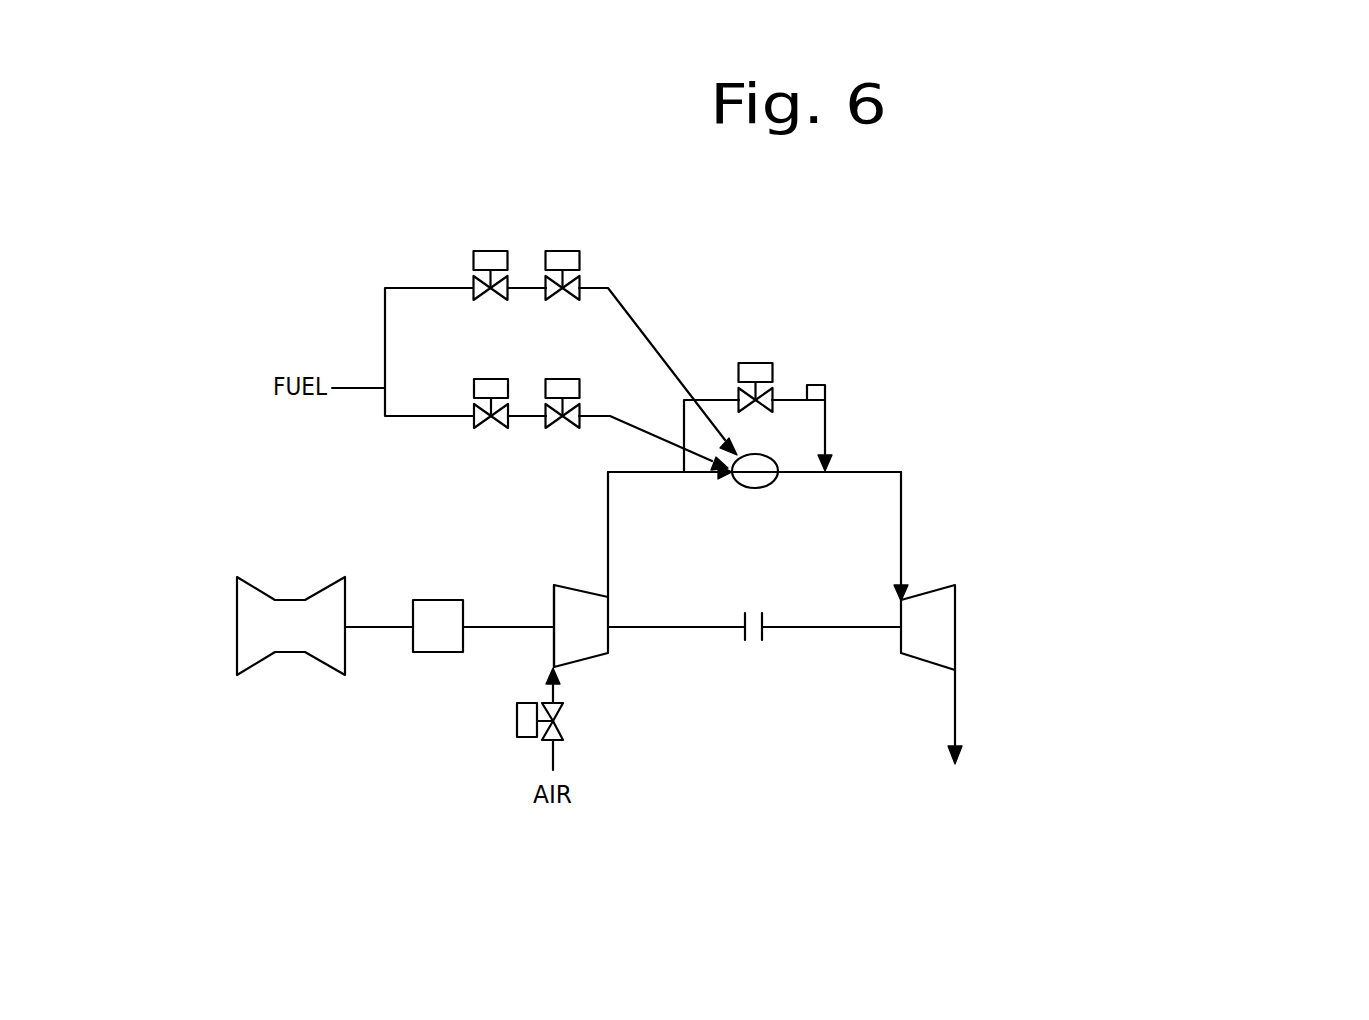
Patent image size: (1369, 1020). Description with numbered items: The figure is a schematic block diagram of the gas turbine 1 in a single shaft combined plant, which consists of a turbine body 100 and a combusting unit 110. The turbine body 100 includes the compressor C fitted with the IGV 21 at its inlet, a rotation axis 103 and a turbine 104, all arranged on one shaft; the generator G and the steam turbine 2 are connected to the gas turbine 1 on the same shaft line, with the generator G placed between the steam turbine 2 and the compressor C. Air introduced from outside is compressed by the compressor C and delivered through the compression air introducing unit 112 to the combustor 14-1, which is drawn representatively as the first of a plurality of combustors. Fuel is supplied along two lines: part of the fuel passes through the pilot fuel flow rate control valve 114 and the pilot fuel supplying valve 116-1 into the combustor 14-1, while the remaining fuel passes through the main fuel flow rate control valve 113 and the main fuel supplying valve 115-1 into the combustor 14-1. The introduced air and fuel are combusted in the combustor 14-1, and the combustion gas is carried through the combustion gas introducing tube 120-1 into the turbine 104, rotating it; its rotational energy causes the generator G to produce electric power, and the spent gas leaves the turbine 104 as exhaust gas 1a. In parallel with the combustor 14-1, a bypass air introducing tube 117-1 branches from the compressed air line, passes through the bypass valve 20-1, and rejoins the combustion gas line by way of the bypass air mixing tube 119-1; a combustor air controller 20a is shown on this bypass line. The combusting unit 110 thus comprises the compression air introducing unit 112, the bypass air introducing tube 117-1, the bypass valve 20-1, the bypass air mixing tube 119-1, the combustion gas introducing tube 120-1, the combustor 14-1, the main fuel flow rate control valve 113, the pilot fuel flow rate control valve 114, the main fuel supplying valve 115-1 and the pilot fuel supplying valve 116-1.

The gas turbine 1 is at (973, 218).
The exhaust gas 1a is at (1026, 731).
The steam turbine 2 is at (282, 650).
The combustor 14-1 is at (736, 488).
The bypass valve 20-1 is at (748, 366).
The combustor air controller 20a is at (818, 385).
The IGV 21 is at (532, 663).
The turbine body 100 is at (792, 748).
The rotation axis 103 is at (795, 630).
The turbine 104 is at (955, 655).
The combusting unit 110 is at (1020, 296).
The compression air introducing unit 112 is at (608, 527).
The main fuel flow rate control valve 113 is at (490, 251).
The pilot fuel flow rate control valve 114 is at (474, 388).
The main fuel supplying valve 115-1 is at (561, 251).
The pilot fuel supplying valve 116-1 is at (568, 418).
The bypass air introducing tube 117-1 is at (684, 428).
The bypass air mixing tube 119-1 is at (826, 437).
The combustion gas introducing tube 120-1 is at (902, 498).
The generator G is at (428, 600).
The compressor C is at (585, 650).